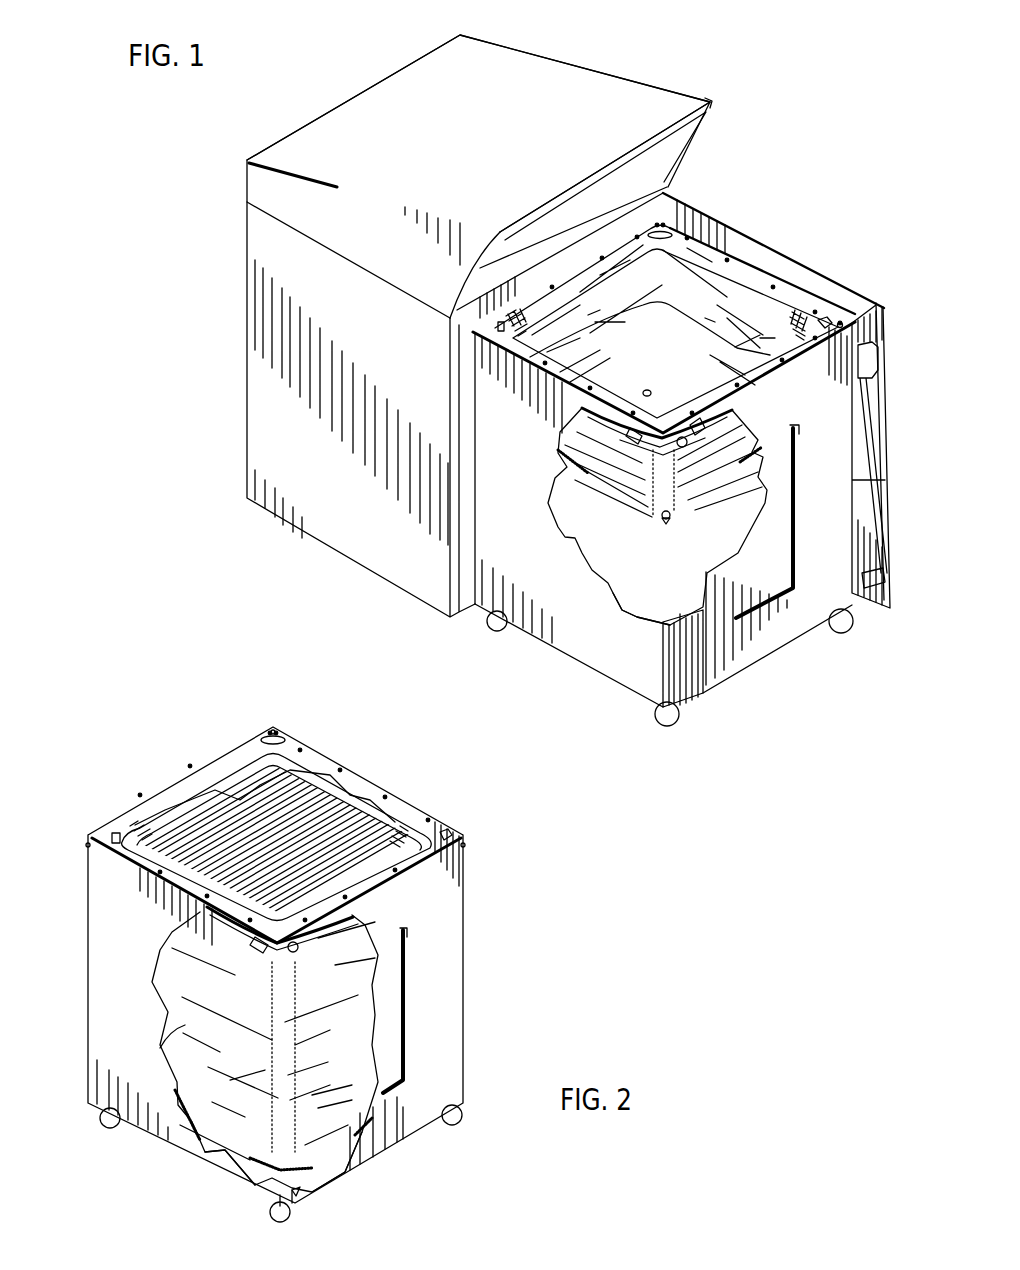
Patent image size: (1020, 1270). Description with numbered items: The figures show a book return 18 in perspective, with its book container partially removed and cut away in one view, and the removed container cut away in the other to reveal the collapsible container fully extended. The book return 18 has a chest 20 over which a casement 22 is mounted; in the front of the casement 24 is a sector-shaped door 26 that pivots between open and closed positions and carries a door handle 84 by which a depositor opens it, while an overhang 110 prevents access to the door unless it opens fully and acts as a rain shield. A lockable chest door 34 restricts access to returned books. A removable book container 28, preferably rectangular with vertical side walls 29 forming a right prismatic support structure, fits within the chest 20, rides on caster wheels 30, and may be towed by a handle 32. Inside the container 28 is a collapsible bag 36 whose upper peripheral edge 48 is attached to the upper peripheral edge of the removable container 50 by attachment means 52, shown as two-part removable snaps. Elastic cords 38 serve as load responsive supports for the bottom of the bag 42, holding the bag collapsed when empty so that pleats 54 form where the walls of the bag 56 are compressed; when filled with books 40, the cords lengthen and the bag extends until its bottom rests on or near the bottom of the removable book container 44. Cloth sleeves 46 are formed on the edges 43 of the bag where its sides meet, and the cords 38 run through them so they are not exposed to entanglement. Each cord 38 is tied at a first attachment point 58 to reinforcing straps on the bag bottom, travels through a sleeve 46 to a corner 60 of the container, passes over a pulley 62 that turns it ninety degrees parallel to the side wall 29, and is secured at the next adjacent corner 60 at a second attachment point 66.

In FIG. 1, the book return 18 is at (715, 60).
In FIG. 1, the chest 20 is at (245, 302).
In FIG. 1, the casement 22 is at (345, 100).
In FIG. 1, the front of the casement 24 is at (690, 170).
In FIG. 1, the sector-shaped door 26 is at (708, 147).
In FIG. 1, the removable book container 28 is at (573, 683).
In FIG. 2, the removable book container 28 is at (490, 966).
In FIG. 1, the side walls 29 is at (470, 402).
In FIG. 2, the side walls 29 is at (465, 925).
In FIG. 1, the caster wheels 30 is at (495, 628).
In FIG. 2, the caster wheels 30 is at (105, 1128).
In FIG. 1, the handle 32 is at (785, 620).
In FIG. 2, the handle 32 is at (410, 1088).
In FIG. 1, the chest door 34 is at (772, 252).
In FIG. 1, the collapsible bag 36 is at (648, 532).
In FIG. 2, the collapsible bag 36 is at (375, 782).
In FIG. 1, the elastic cords 38 is at (710, 432).
In FIG. 2, the elastic cords 38 is at (248, 925).
In FIG. 2, the books 40 is at (264, 840).
In FIG. 1, the bottom of the bag 42 is at (659, 368).
In FIG. 2, the bottom of the bag 42 is at (250, 1160).
In FIG. 1, the edges of the bag 43 is at (665, 482).
In FIG. 2, the edges of the bag 43 is at (278, 1005).
In FIG. 1, the bottom of the removable book container 44 is at (639, 588).
In FIG. 2, the bottom of the removable book container 44 is at (350, 1172).
In FIG. 1, the cloth sleeves 46 is at (645, 510).
In FIG. 2, the cloth sleeves 46 is at (300, 1096).
In FIG. 1, the upper peripheral edge of the bag 48 is at (800, 292).
In FIG. 2, the upper peripheral edge of the bag 48 is at (185, 778).
In FIG. 1, the upper peripheral edge of the removable container 50 is at (853, 310).
In FIG. 2, the upper peripheral edge of the removable container 50 is at (318, 752).
In FIG. 1, the attachment means 52 is at (540, 372).
In FIG. 2, the attachment means 52 is at (392, 873).
In FIG. 1, the pleats 54 is at (652, 477).
In FIG. 2, the pleats 54 is at (160, 1048).
In FIG. 2, the walls of the bag 56 is at (322, 1045).
In FIG. 1, the first attachment point 58 is at (668, 522).
In FIG. 2, the first attachment point 58 is at (312, 1195).
In FIG. 1, the corner 60 is at (842, 324).
In FIG. 2, the corner 60 is at (273, 727).
In FIG. 1, the pulley 62 is at (700, 418).
In FIG. 1, the second attachment point 66 is at (636, 430).
In FIG. 2, the second attachment point 66 is at (270, 938).
In FIG. 1, the door handle 84 is at (713, 108).
In FIG. 1, the overhang 110 is at (495, 232).